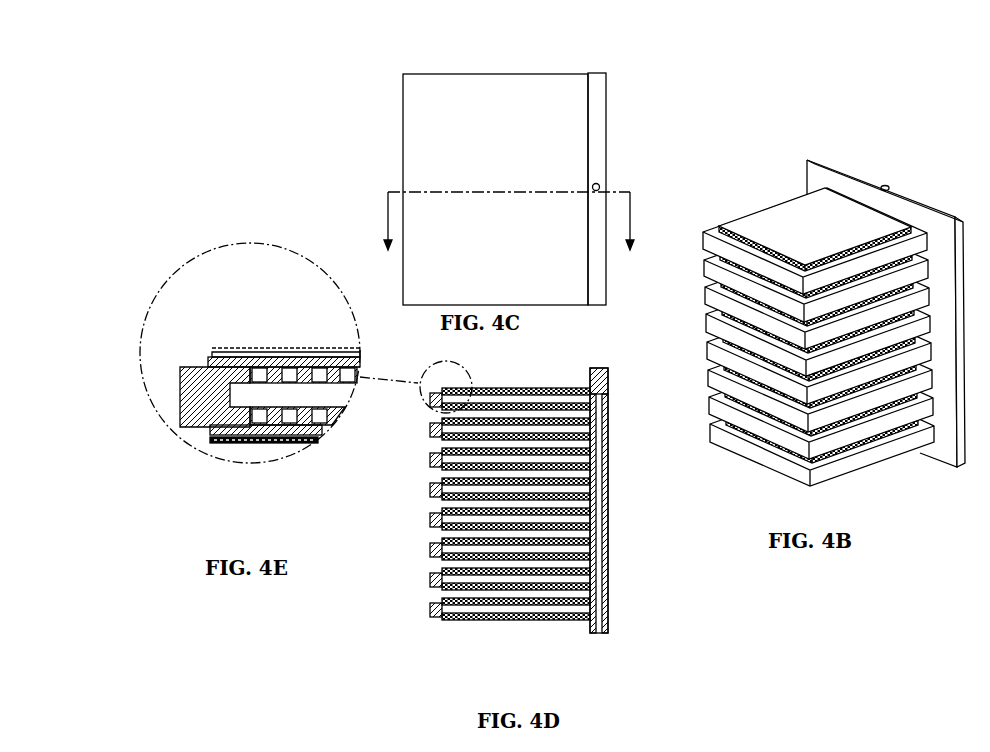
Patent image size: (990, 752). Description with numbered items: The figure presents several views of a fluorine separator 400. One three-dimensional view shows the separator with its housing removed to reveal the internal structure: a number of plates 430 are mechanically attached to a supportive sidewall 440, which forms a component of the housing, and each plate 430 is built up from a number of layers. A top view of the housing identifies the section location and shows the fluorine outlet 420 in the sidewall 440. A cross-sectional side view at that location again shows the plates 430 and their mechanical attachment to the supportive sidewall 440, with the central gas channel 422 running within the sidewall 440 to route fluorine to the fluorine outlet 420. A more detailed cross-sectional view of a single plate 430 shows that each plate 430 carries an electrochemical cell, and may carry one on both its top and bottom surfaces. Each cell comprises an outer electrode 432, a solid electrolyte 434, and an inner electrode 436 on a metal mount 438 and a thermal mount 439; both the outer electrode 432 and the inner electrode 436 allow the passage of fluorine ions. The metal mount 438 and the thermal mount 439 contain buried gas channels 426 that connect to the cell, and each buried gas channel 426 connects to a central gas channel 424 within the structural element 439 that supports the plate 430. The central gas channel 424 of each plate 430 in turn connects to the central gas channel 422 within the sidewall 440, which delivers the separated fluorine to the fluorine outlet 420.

In FIG. 4B, the fluorine separator 400 is at (804, 290).
In FIG. 4B, the fluorine outlet 420 is at (887, 186).
In FIG. 4C, the fluorine outlet 420 is at (594, 183).
In FIG. 4D, the central gas channel 422 is at (607, 608).
In FIG. 4E, the central gas channel 424 is at (347, 393).
In FIG. 4E, the buried gas channels 426 is at (320, 420).
In FIG. 4B, the plate 430 is at (702, 254).
In FIG. 4D, the plate 430 is at (428, 551).
In FIG. 4E, the plate 430 is at (105, 223).
In FIG. 4E, the outer electrode 432 is at (253, 348).
In FIG. 4E, the solid electrolyte 434 is at (220, 356).
In FIG. 4E, the inner electrode 436 is at (157, 288).
In FIG. 4E, the metal mount 438 is at (206, 359).
In FIG. 4E, the thermal mount 439 is at (180, 397).
In FIG. 4B, the supportive sidewall 440 is at (886, 286).
In FIG. 4C, the supportive sidewall 440 is at (598, 71).
In FIG. 4D, the supportive sidewall 440 is at (589, 487).